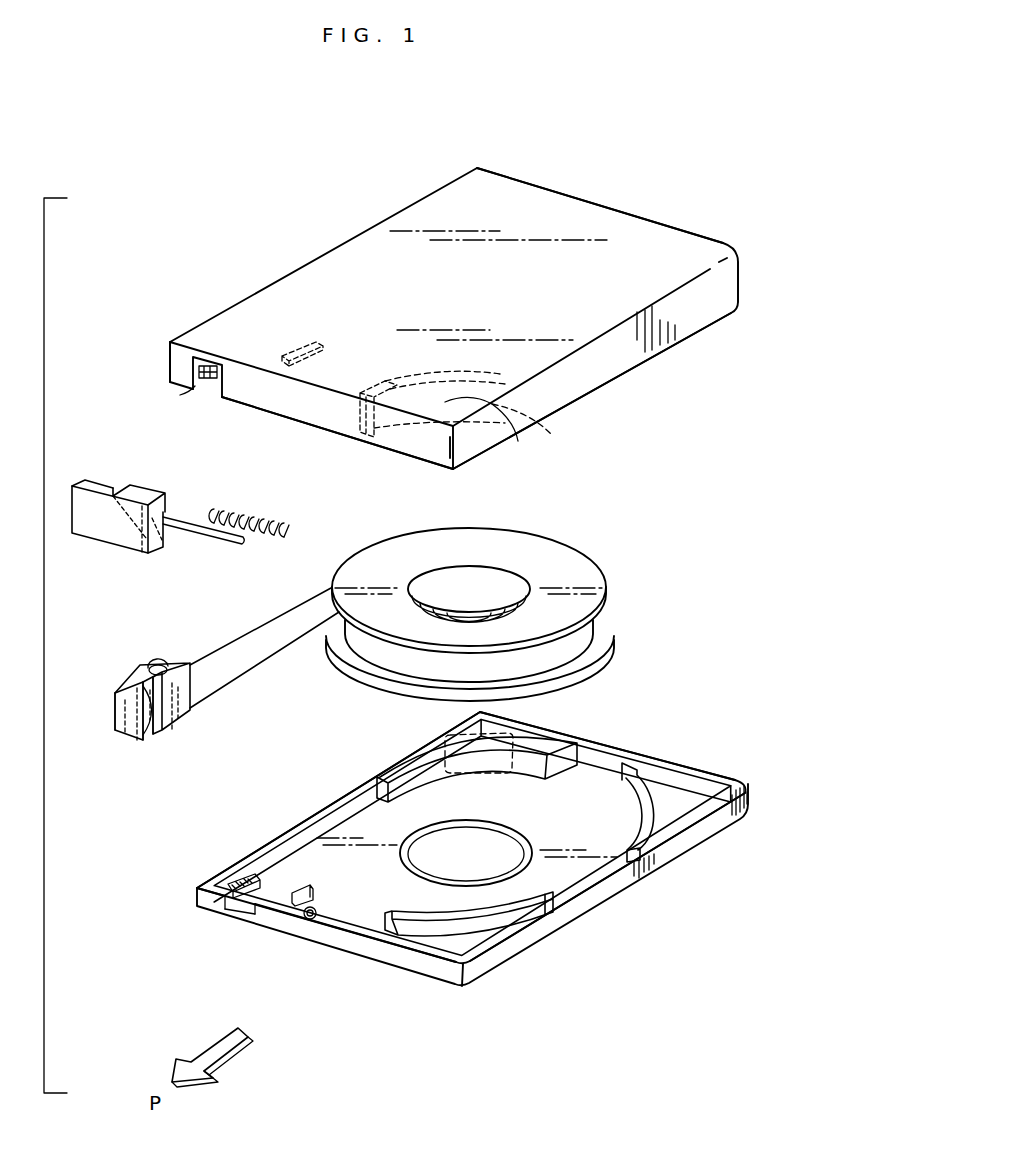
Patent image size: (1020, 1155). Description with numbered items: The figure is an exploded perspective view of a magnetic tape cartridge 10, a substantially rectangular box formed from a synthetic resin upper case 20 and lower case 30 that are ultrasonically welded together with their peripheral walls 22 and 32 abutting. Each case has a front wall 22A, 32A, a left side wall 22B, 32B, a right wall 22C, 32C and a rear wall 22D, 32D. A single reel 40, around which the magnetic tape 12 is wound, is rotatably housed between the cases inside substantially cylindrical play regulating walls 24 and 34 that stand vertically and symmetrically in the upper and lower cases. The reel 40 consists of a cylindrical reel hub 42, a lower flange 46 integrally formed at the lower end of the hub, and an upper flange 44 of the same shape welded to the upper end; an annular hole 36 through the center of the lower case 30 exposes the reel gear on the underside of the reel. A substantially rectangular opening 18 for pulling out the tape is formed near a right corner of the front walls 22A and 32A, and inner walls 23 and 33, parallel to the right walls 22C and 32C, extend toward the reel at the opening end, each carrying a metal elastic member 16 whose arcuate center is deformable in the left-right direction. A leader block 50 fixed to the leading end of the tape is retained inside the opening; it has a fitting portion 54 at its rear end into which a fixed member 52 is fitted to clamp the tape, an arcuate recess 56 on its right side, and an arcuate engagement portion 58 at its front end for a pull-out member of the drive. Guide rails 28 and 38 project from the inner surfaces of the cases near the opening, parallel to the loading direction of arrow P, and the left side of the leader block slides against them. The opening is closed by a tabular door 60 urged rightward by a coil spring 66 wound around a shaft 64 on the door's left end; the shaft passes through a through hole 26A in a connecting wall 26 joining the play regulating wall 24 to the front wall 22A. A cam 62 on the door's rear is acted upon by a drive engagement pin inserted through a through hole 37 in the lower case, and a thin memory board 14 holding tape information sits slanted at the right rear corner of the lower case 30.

The magnetic tape cartridge 10 is at (628, 118).
The magnetic tape 12 is at (252, 655).
The memory board 14 is at (440, 745).
The elastic member 16 is at (208, 363).
The opening 18 is at (222, 391).
The upper case 20 is at (690, 247).
The peripheral wall 22 is at (740, 283).
The front wall 22A is at (270, 405).
The left side wall 22B is at (585, 383).
The right wall 22C is at (170, 355).
The rear wall 22D is at (600, 205).
The inner wall 23 is at (180, 395).
The play regulating wall 24 is at (518, 441).
The connecting wall 26 is at (374, 432).
The through hole 26A is at (388, 380).
The guide rail 28 is at (285, 348).
The lower case 30 is at (630, 878).
The peripheral wall 32 is at (487, 963).
The front wall 32A is at (290, 925).
The left side wall 32B is at (570, 915).
The right wall 32C is at (270, 832).
The rear wall 32D is at (600, 748).
The inner wall 33 is at (228, 908).
The play regulating wall 34 is at (628, 770).
The hole 36 is at (490, 830).
The through hole 37 is at (312, 928).
The guide rail 38 is at (312, 905).
The reel 40 is at (603, 560).
The reel hub 42 is at (482, 572).
The upper flange 44 is at (565, 548).
The lower flange 46 is at (612, 662).
The leader block 50 is at (128, 735).
The fixed member 52 is at (152, 668).
The fitting portion 54 is at (164, 666).
The recess 56 is at (118, 690).
The engagement portion 58 is at (150, 742).
The door 60 is at (102, 524).
The cam 62 is at (150, 500).
The shaft 64 is at (210, 542).
The coil spring 66 is at (290, 522).